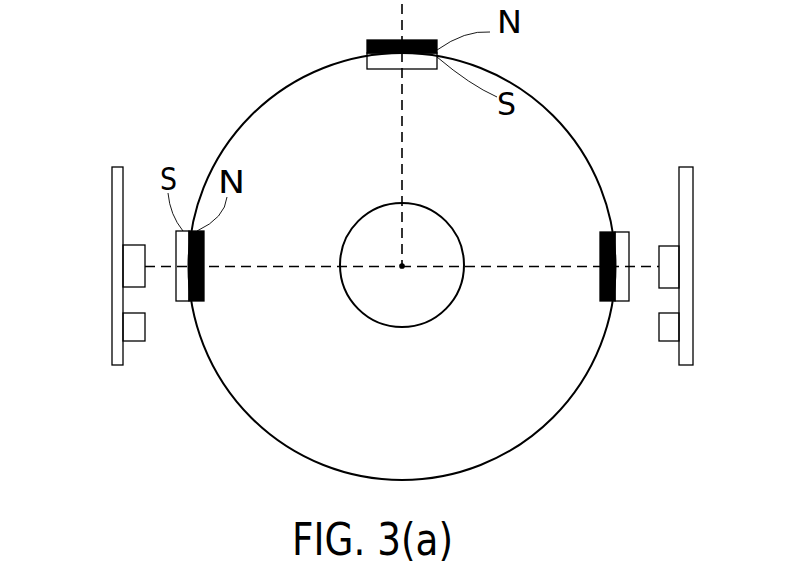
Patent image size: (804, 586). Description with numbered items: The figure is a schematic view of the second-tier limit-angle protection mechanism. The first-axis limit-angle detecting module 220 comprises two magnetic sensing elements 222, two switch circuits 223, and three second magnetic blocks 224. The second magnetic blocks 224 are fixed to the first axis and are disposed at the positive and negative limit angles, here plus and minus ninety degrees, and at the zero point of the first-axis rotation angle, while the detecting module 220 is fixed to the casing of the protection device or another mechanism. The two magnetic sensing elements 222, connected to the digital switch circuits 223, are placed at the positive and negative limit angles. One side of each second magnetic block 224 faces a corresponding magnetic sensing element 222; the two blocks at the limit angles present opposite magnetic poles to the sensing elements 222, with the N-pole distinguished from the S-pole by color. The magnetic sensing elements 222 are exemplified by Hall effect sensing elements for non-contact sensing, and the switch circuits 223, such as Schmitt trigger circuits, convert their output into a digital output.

The first-axis limit-angle detecting module 220 is at (112, 217).
The magnetic sensing element 222 is at (668, 240).
The switch circuit 223 is at (670, 342).
The second magnetic block 224 is at (615, 230).